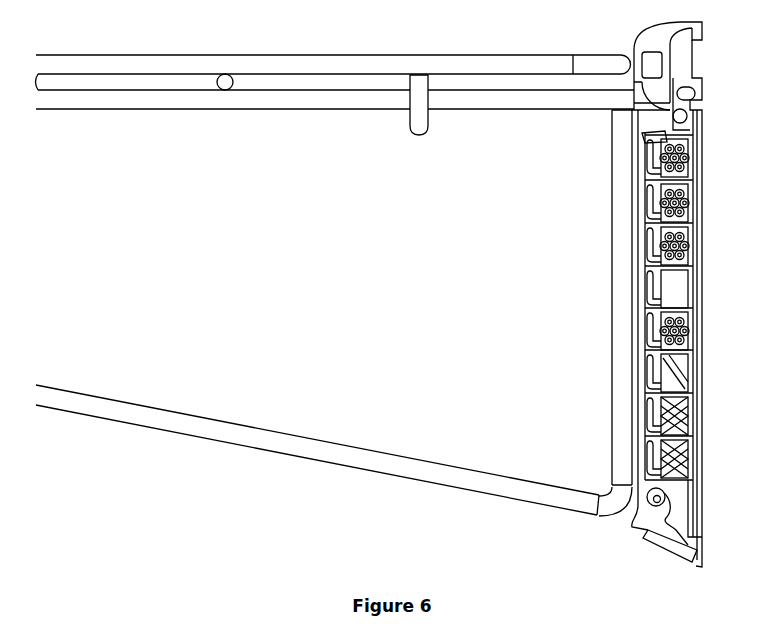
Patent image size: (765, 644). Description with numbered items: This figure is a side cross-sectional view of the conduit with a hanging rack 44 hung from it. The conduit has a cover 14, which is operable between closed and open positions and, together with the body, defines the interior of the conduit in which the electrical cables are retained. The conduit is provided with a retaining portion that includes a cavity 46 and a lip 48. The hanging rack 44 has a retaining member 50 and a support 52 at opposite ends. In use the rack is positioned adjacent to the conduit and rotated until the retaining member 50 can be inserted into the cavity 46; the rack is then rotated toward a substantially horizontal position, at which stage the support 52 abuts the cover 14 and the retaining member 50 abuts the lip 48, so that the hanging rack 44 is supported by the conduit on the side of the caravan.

The cover 14 is at (630, 181).
The hanging rack 44 is at (529, 106).
The cavity 46 is at (664, 102).
The lip 48 is at (626, 59).
The retaining member 50 is at (659, 67).
The support 52 is at (618, 142).